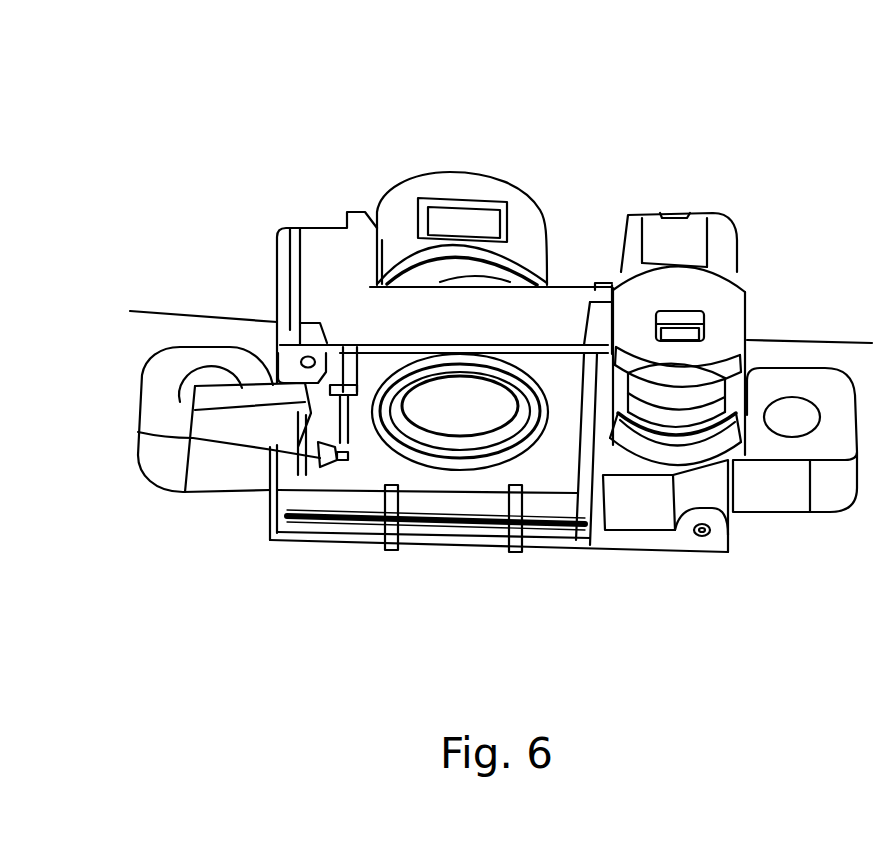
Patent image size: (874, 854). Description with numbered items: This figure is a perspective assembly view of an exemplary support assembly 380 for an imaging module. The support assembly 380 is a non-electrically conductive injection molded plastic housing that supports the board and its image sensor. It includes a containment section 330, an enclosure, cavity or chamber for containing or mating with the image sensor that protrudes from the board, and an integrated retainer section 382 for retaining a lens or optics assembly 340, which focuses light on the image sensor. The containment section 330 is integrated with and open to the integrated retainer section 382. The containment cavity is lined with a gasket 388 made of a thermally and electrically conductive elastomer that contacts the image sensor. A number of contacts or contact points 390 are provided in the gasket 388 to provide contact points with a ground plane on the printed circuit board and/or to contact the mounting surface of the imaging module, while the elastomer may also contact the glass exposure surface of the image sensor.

The lens or optics assembly 340 is at (452, 134).
The support assembly 380 is at (327, 247).
The integrated retainer section 382 is at (527, 227).
The gasket 388 is at (550, 468).
The contacts or contact points 390 is at (350, 380).
The containment section 330 is at (438, 576).